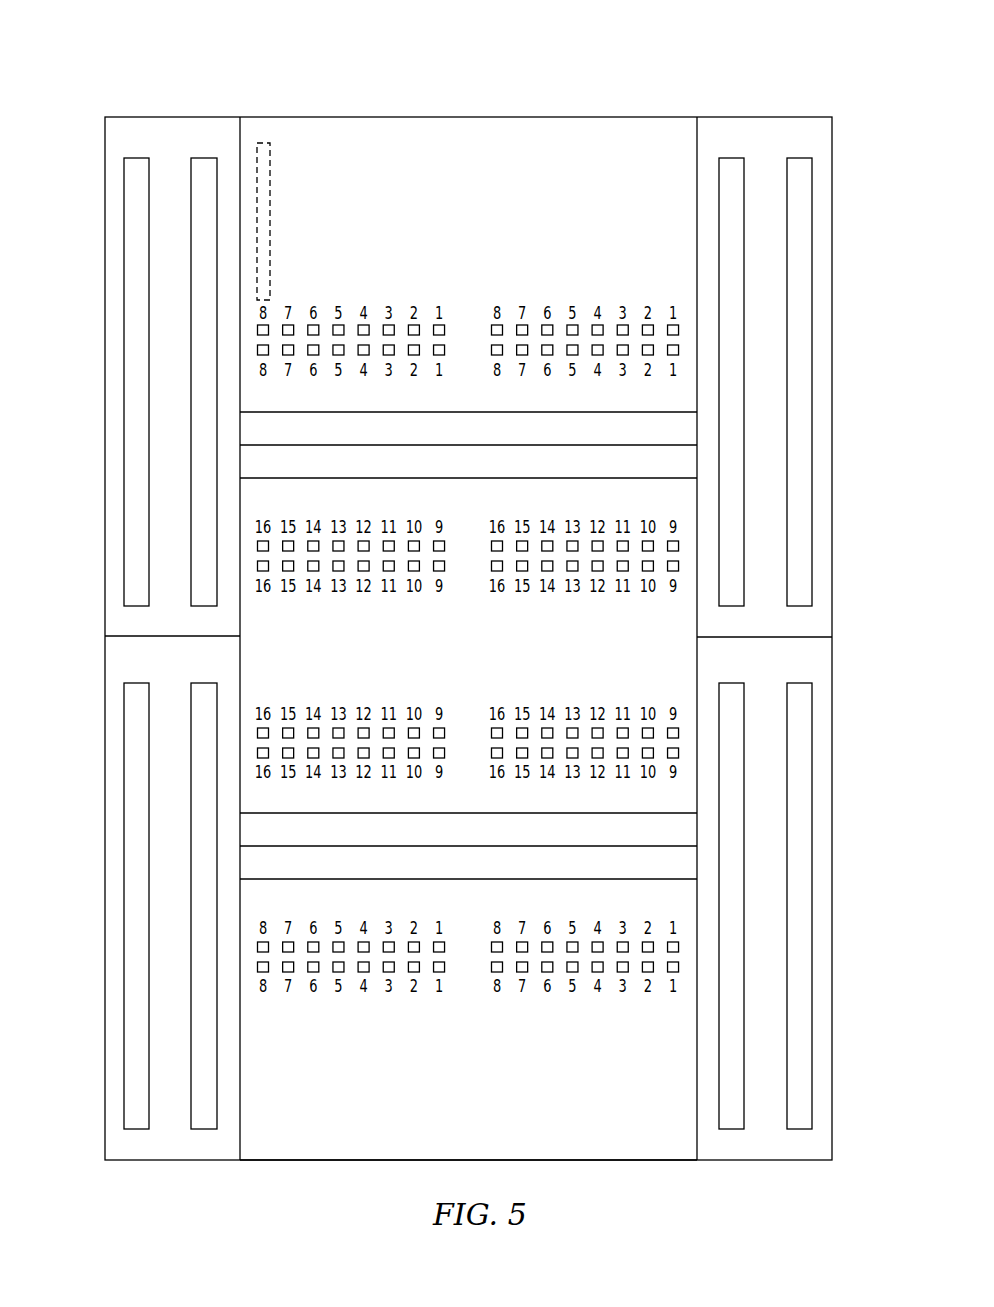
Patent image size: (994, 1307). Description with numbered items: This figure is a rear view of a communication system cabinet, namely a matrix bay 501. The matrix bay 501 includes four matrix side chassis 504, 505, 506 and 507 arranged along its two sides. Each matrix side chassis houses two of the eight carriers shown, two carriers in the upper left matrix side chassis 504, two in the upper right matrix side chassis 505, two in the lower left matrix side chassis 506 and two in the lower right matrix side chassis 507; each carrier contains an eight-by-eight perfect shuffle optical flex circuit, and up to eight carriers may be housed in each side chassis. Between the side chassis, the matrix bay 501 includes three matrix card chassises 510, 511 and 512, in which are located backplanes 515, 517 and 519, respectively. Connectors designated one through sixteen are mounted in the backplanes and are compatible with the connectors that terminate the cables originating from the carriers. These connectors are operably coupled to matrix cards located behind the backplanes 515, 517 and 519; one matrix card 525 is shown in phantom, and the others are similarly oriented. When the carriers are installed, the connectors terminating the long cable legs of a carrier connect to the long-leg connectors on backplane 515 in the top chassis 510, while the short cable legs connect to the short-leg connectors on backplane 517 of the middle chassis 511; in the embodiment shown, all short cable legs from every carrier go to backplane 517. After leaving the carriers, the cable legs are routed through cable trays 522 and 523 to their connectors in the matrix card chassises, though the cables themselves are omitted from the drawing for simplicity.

The matrix bay 501 is at (750, 78).
The matrix side chassis 504 is at (105, 117).
The matrix side chassis 505 is at (832, 117).
The matrix side chassis 506 is at (110, 652).
The matrix side chassis 507 is at (826, 652).
The matrix card chassis 510 is at (553, 127).
The matrix card chassis 511 is at (689, 622).
The matrix card chassis 512 is at (643, 1155).
The backplane 515 is at (454, 223).
The backplane 517 is at (455, 655).
The backplane 519 is at (454, 1067).
The cable tray 522 is at (642, 438).
The cable tray 523 is at (642, 839).
The matrix card 525 is at (270, 215).